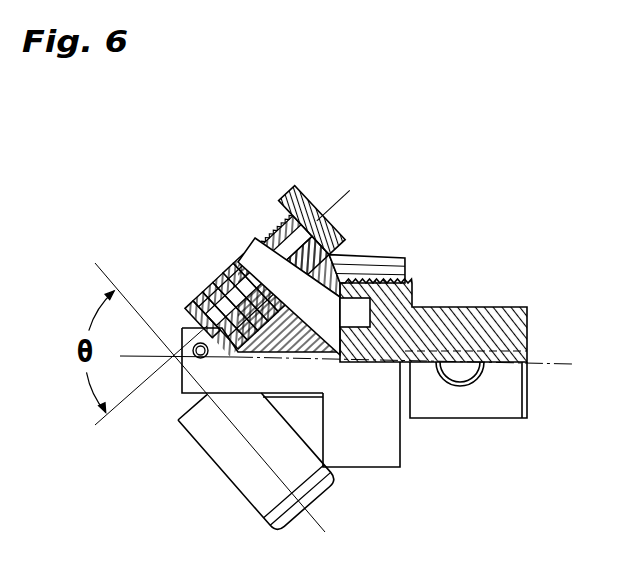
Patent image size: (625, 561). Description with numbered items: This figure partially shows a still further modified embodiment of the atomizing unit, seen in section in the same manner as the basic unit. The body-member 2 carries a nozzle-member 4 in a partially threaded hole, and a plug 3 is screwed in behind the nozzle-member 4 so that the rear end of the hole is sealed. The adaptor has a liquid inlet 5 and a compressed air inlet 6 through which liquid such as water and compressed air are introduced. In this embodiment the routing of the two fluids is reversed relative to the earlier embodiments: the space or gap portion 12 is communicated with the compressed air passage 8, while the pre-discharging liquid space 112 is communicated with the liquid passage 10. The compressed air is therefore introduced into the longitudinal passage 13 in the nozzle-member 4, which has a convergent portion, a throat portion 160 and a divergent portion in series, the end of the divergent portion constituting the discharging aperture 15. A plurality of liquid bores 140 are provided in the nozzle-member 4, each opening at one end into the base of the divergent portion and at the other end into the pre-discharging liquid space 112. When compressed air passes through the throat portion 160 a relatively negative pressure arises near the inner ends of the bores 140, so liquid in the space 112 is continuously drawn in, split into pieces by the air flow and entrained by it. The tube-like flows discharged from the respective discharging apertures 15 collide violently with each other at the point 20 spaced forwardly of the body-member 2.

The body-member 2 is at (337, 250).
The plug 3 is at (296, 186).
The nozzle-member 4 is at (247, 262).
The liquid inlet 5 is at (503, 352).
The compressed air inlet 6 is at (459, 375).
The compressed air passage 8 is at (330, 260).
The liquid passage 10 is at (327, 368).
The space or gap portion 12 is at (267, 247).
The longitudinal passage 13 is at (233, 272).
The discharging aperture 15 is at (199, 326).
The point 20 is at (172, 357).
The pre-discharging liquid space 112 is at (200, 268).
The liquid bore 140 is at (198, 297).
The throat portion 160 is at (203, 282).